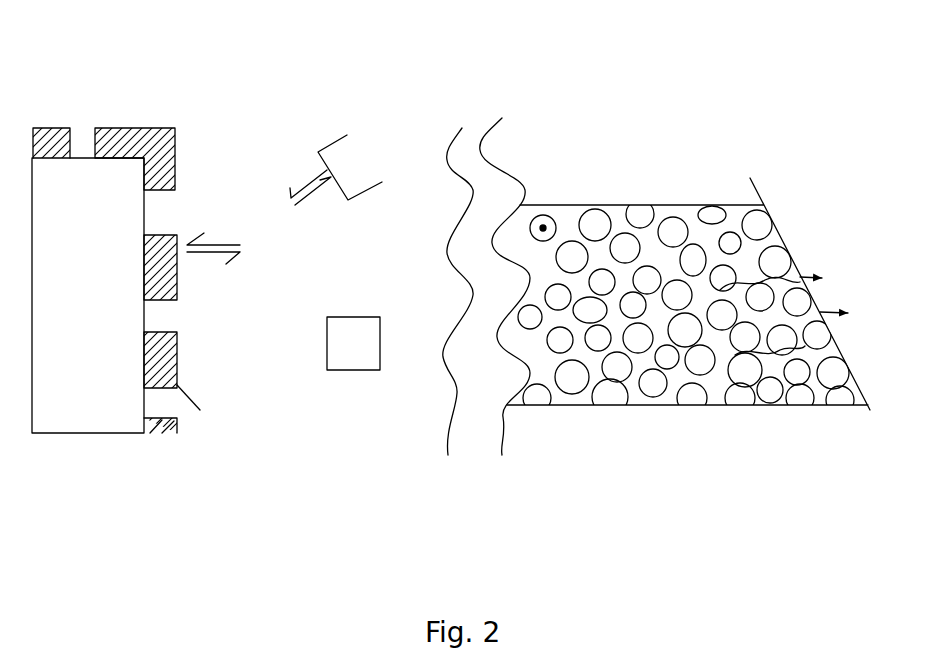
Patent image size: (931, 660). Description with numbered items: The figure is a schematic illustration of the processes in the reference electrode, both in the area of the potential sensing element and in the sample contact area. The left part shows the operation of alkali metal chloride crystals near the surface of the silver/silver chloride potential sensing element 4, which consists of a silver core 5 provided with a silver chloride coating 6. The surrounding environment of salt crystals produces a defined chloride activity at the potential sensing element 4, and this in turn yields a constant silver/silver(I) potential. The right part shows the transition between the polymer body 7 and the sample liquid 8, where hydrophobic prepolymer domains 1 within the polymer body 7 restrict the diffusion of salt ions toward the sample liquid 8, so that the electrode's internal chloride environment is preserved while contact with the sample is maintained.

The hydrophobic prepolymer domains 1 is at (543, 226).
The potential sensing element 4 is at (160, 102).
The silver core 5 is at (86, 180).
The silver chloride coating 6 is at (135, 145).
The polymer body 7 is at (633, 190).
The sample liquid 8 is at (845, 240).